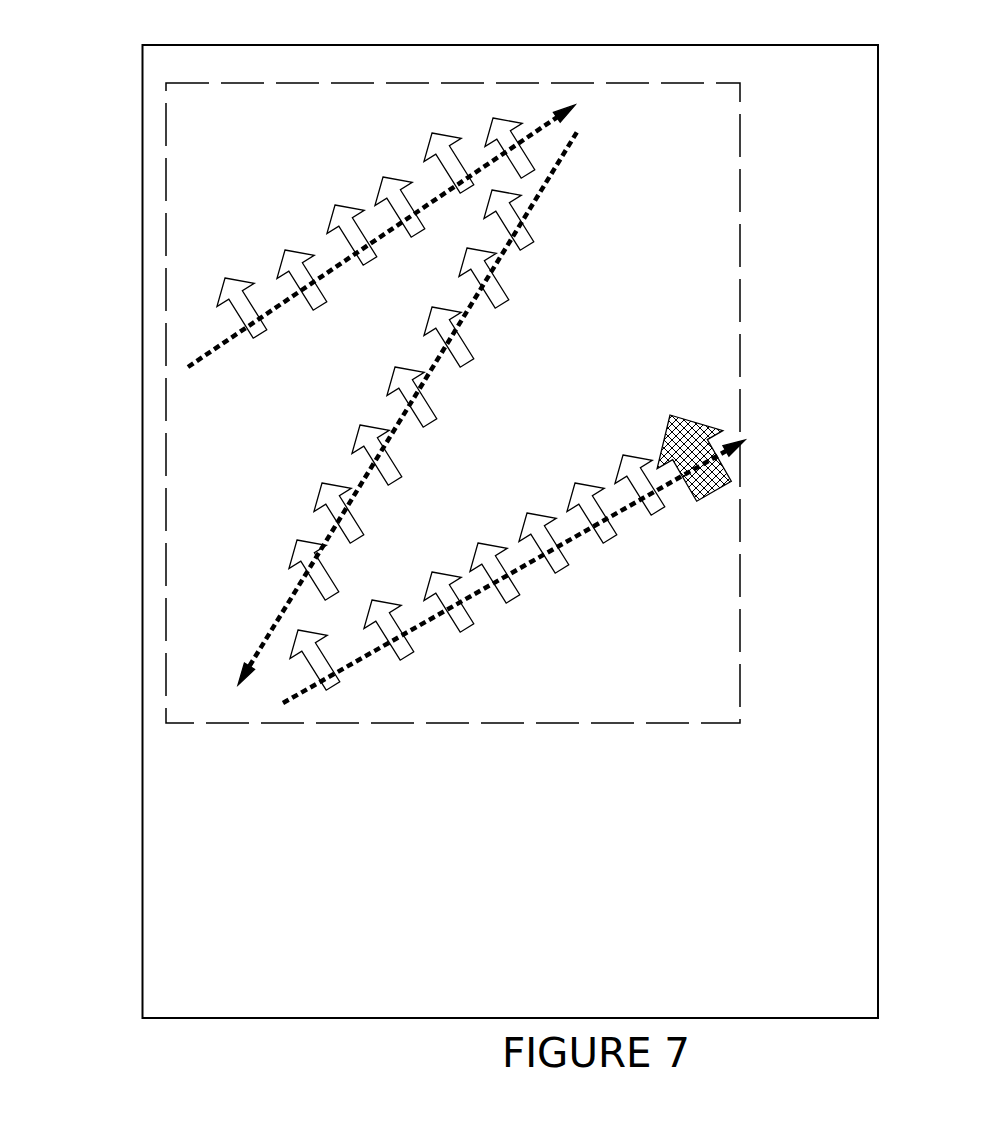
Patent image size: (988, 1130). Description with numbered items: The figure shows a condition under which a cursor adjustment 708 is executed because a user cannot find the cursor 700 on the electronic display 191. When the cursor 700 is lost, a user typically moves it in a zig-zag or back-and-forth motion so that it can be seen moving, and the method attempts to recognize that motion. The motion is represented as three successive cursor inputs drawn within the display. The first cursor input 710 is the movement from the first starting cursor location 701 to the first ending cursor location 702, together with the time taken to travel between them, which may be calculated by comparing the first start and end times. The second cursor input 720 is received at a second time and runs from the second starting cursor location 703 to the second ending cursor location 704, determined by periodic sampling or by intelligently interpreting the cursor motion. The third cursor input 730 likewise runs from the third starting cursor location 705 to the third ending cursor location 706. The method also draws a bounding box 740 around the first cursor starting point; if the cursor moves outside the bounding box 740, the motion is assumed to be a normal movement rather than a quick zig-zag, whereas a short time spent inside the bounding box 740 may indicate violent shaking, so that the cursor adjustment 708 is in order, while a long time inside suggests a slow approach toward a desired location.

The electronic display 191 is at (142, 122).
The cursor 700 is at (292, 262).
The first starting cursor location 701 is at (233, 292).
The first ending cursor location 702 is at (505, 128).
The second starting cursor location 703 is at (500, 207).
The second ending cursor location 704 is at (307, 553).
The third starting cursor location 705 is at (307, 640).
The third ending cursor location 706 is at (717, 432).
The cursor adjustment 708 is at (720, 516).
The first cursor input 710 is at (208, 372).
The second cursor input 720 is at (219, 654).
The third cursor input 730 is at (592, 602).
The bounding box 740 is at (517, 722).